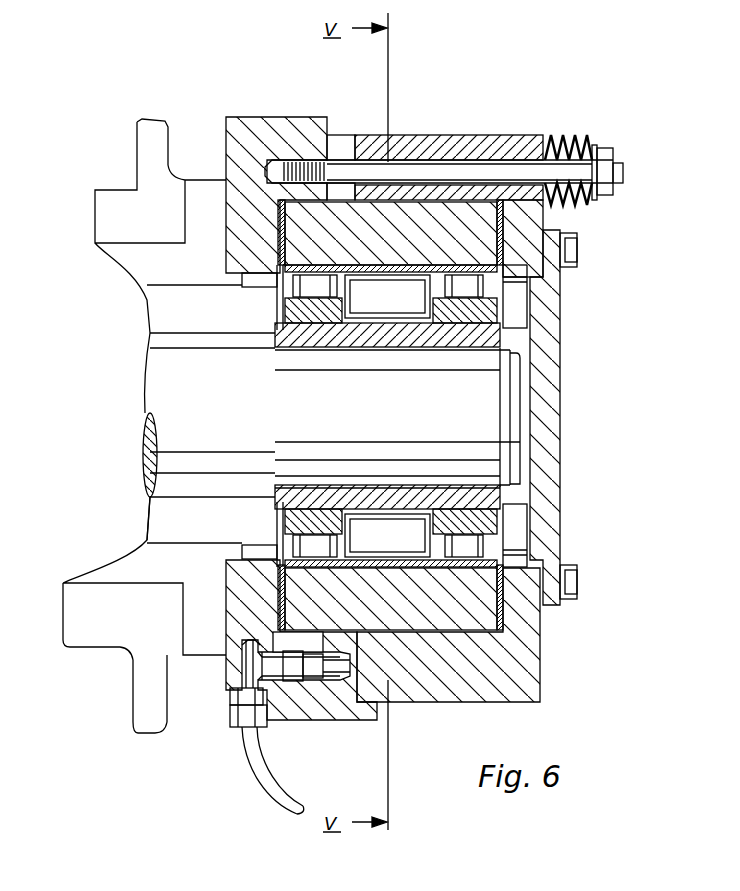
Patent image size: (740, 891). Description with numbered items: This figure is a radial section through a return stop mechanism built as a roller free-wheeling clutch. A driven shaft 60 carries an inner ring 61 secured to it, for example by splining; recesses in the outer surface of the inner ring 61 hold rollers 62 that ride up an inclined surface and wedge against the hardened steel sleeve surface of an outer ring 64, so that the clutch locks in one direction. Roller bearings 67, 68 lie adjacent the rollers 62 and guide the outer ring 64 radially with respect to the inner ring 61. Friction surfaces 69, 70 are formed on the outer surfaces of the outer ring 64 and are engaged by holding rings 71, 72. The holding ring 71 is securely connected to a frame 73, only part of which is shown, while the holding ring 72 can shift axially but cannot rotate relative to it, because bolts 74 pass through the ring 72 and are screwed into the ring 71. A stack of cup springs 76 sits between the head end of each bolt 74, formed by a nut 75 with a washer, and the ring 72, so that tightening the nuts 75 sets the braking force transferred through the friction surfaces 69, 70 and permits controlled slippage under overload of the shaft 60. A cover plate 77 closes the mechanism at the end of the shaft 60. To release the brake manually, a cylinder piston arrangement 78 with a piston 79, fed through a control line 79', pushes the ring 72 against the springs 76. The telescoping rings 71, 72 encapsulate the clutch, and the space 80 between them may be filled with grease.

The driven shaft 60 is at (165, 425).
The inner ring 61 is at (283, 354).
The rollers 62 is at (403, 302).
The outer ring 64 is at (447, 617).
The roller bearing 67 is at (520, 294).
The roller bearing 68 is at (300, 288).
The friction surface 69 is at (503, 617).
The friction surface 70 is at (226, 598).
The holding ring 71 is at (264, 118).
The holding ring 72 is at (520, 218).
The frame 73 is at (138, 168).
The bolt 74 is at (485, 168).
The nut 75 is at (604, 160).
The cup springs 76 is at (557, 145).
The cover plate 77 is at (552, 500).
The cylinder piston arrangement 78 is at (222, 741).
The piston 79 is at (296, 695).
The control line 79' is at (260, 774).
The space 80 is at (341, 135).